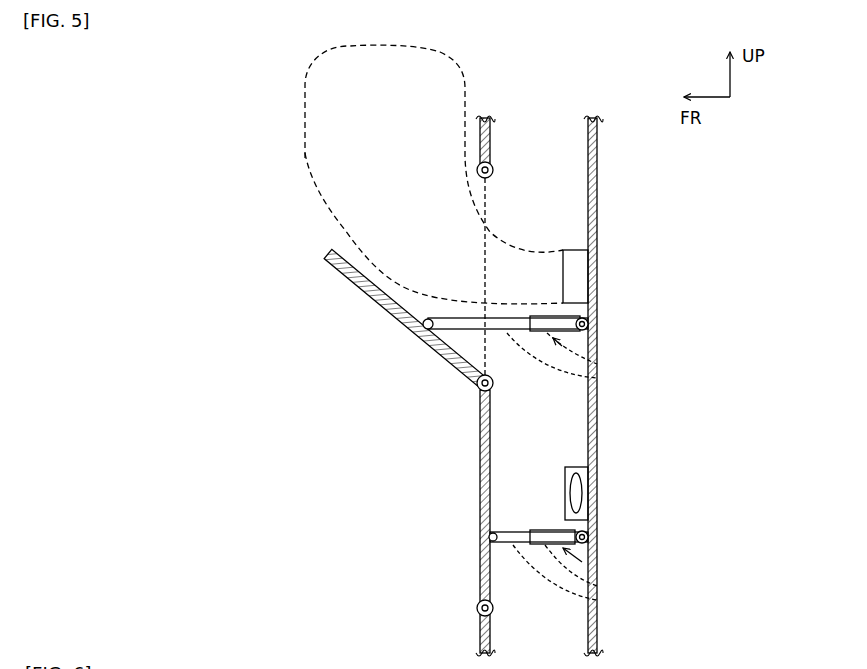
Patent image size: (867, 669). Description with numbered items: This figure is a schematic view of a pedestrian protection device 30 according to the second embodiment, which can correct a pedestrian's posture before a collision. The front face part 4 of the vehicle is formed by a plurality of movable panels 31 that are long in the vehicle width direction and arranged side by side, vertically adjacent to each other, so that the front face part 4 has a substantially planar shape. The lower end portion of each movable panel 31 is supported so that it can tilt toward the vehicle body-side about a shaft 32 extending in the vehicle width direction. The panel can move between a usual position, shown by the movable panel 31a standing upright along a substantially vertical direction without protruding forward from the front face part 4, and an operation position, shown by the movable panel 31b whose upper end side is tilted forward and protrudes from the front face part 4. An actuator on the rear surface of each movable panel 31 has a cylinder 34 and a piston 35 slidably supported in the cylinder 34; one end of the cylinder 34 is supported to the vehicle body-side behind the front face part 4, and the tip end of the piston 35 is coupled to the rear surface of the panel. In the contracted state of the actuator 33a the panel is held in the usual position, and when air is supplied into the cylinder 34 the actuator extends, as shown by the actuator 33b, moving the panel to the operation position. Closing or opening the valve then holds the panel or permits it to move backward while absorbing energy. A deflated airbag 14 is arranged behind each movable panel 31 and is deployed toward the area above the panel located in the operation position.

The front face part 4 is at (480, 485).
The airbag 14 is at (440, 52).
The pedestrian protection device 30 is at (263, 100).
The movable panel 31 is at (359, 386).
The movable panel in usual position 31a is at (480, 435).
The movable panel in operation position 31b is at (353, 281).
The shaft 32 is at (489, 165).
The actuator in contracted state 33a is at (597, 565).
The actuator in extended state 33b is at (597, 355).
The cylinder 34 is at (588, 335).
The piston 35 is at (597, 378).